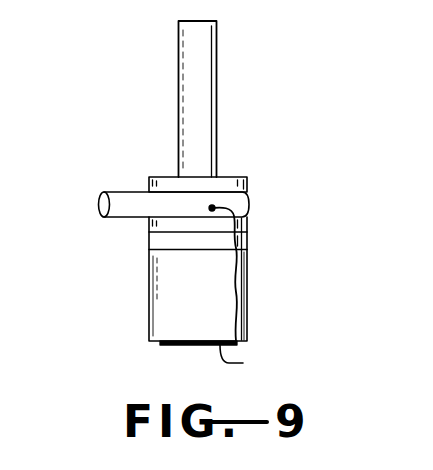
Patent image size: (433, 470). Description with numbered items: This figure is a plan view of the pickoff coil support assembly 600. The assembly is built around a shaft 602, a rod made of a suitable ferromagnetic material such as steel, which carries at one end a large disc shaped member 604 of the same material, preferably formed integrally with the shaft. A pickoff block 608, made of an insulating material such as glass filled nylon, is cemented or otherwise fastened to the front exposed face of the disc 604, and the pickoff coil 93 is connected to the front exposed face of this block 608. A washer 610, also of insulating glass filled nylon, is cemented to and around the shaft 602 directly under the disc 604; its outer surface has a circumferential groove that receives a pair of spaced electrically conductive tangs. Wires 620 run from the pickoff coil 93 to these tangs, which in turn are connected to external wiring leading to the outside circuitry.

The pickoff coil support assembly 600 is at (122, 136).
The shaft 602 is at (207, 92).
The washer 610 is at (245, 185).
The disc shaped member 604 is at (152, 242).
The pickoff block 608 is at (158, 327).
The wires 620 is at (240, 310).
The pickoff coil 93 is at (245, 361).